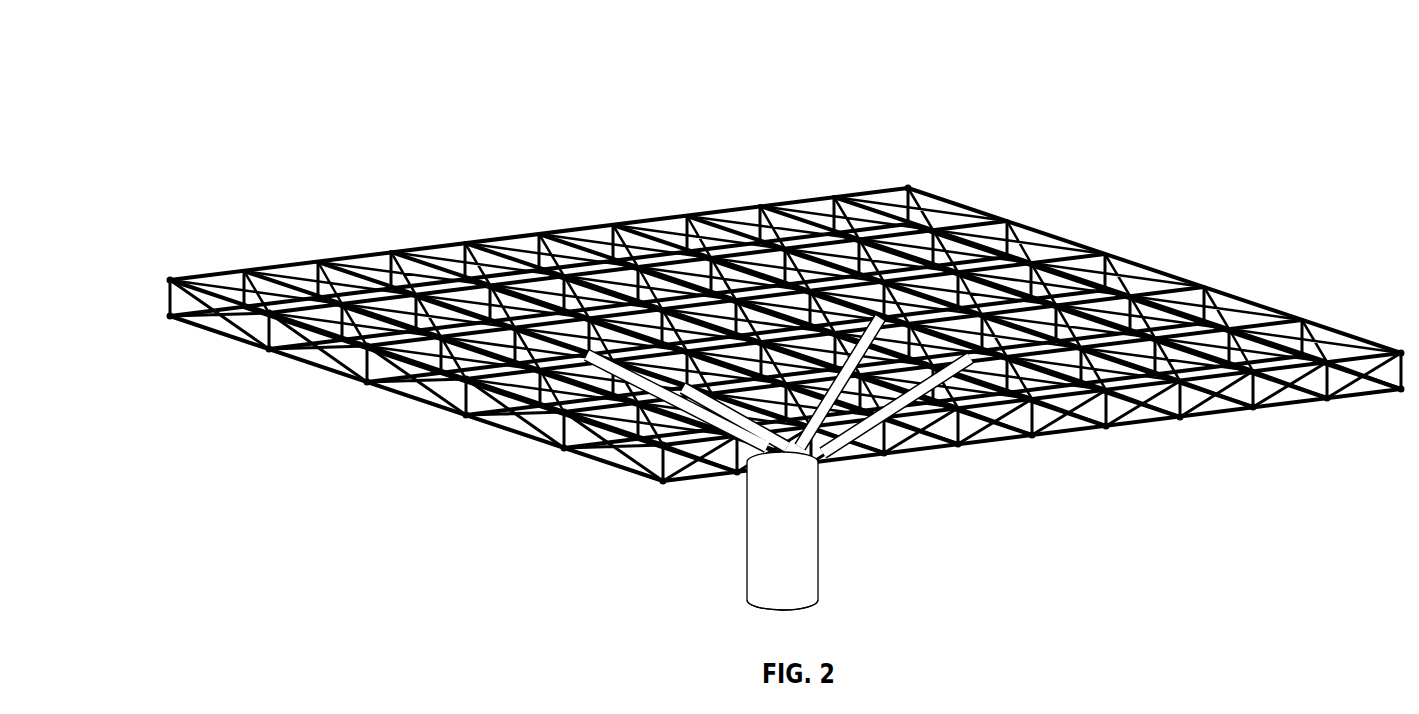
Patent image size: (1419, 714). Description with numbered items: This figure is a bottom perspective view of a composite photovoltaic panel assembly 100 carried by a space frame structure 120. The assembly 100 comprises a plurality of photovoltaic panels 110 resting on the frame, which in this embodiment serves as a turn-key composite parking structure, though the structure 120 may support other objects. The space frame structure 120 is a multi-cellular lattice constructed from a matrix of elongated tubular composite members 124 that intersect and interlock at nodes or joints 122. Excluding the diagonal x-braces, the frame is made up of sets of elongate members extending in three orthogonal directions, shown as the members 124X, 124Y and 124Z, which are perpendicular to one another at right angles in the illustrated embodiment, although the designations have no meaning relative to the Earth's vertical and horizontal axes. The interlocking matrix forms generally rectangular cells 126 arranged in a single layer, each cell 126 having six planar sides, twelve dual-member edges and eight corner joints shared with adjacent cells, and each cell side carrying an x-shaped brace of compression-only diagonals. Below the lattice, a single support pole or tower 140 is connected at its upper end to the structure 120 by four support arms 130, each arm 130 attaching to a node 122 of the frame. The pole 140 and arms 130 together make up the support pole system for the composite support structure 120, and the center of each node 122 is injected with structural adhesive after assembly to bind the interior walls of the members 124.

The photovoltaic panel assembly 100 is at (276, 96).
The photovoltaic panels 110 is at (1059, 224).
The space frame structure 120 is at (1044, 447).
The node 122 is at (537, 417).
The elongated members 124 is at (212, 342).
The X-direction members 124X is at (405, 245).
The Y-direction members 124Y is at (220, 273).
The Z-direction members 124Z is at (967, 230).
The rectangular cell 126 is at (795, 208).
The support arms 130 is at (838, 458).
The support pole 140 is at (747, 538).